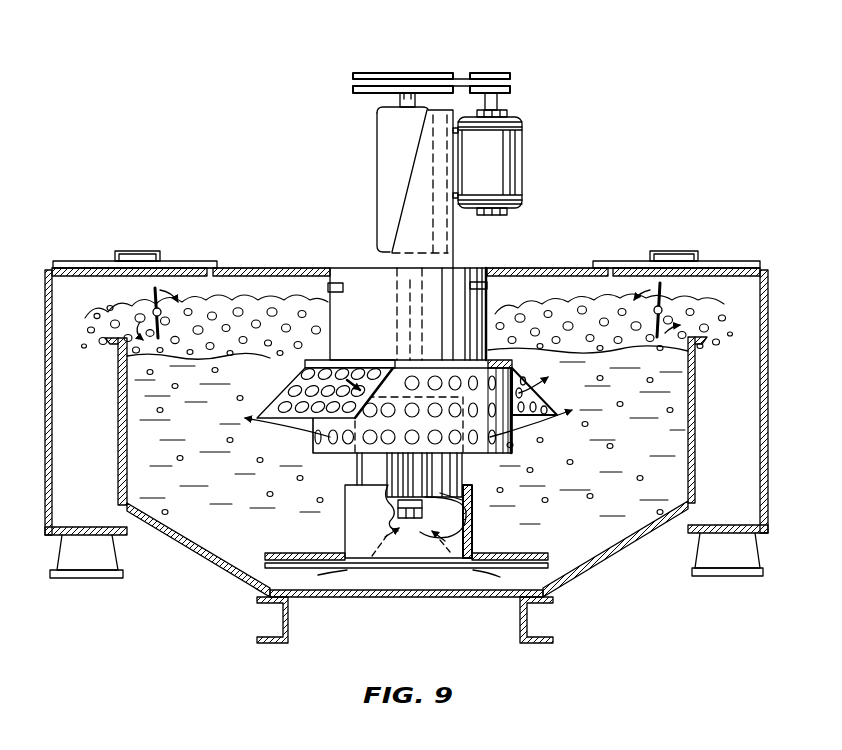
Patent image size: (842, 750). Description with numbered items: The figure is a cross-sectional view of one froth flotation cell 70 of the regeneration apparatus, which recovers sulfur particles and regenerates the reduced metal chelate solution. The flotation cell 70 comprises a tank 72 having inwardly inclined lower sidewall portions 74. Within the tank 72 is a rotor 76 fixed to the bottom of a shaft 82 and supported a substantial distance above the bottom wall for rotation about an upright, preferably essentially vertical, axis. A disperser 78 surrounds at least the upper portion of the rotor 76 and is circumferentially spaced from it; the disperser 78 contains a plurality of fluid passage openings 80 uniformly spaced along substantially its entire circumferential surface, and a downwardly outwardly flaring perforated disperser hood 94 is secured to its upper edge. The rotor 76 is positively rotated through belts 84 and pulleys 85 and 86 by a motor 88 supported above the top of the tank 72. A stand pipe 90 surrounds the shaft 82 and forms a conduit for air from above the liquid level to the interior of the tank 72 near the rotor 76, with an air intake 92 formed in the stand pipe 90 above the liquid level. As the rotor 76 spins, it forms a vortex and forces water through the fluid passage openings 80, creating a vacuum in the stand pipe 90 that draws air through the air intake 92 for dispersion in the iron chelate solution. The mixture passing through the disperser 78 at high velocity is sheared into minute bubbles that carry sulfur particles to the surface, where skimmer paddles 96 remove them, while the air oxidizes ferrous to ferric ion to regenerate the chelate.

The flotation cell 70 is at (650, 211).
The tank 72 is at (272, 268).
The inwardly inclined lower sidewall portions 74 is at (203, 555).
The rotor 76 is at (473, 512).
The disperser 78 is at (345, 452).
The fluid passage openings 80 is at (386, 454).
The shaft 82 is at (413, 298).
The belts 84 is at (464, 74).
The pulley 85 is at (374, 73).
The pulley 86 is at (505, 74).
The motor 88 is at (522, 148).
The stand pipe 90 is at (358, 270).
The air intake 92 is at (326, 285).
The perforated disperser hood 94 is at (510, 358).
The skimmer paddles 96 is at (160, 305).